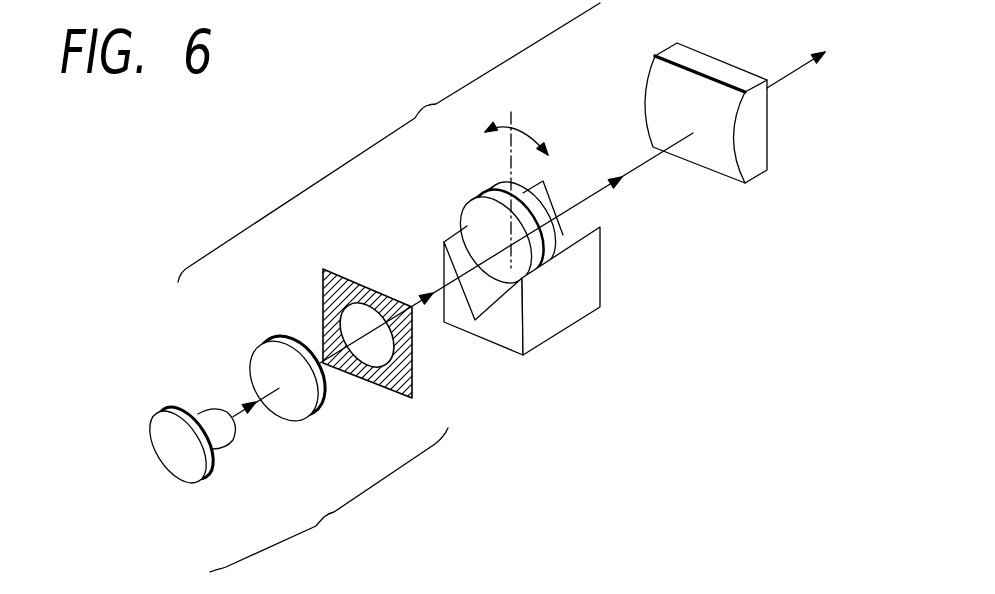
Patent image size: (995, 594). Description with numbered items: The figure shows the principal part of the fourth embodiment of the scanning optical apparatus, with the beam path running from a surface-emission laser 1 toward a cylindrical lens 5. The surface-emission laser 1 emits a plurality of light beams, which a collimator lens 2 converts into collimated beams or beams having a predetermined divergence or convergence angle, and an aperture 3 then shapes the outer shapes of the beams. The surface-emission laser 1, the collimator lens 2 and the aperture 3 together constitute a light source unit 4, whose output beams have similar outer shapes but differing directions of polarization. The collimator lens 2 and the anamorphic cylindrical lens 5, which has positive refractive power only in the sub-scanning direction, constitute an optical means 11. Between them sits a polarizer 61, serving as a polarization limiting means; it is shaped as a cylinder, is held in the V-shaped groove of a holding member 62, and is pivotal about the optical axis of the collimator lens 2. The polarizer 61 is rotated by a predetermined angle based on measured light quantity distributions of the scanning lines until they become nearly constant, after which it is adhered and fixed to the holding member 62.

The surface-emission laser 1 is at (205, 480).
The collimator lens 2 is at (300, 420).
The aperture 3 is at (383, 390).
The light source unit 4 is at (329, 500).
The anamorphic lens (cylindrical lens) 5 is at (725, 167).
The optical means 11 is at (389, 142).
The polarizer 61 is at (473, 218).
The holding member 62 is at (562, 330).